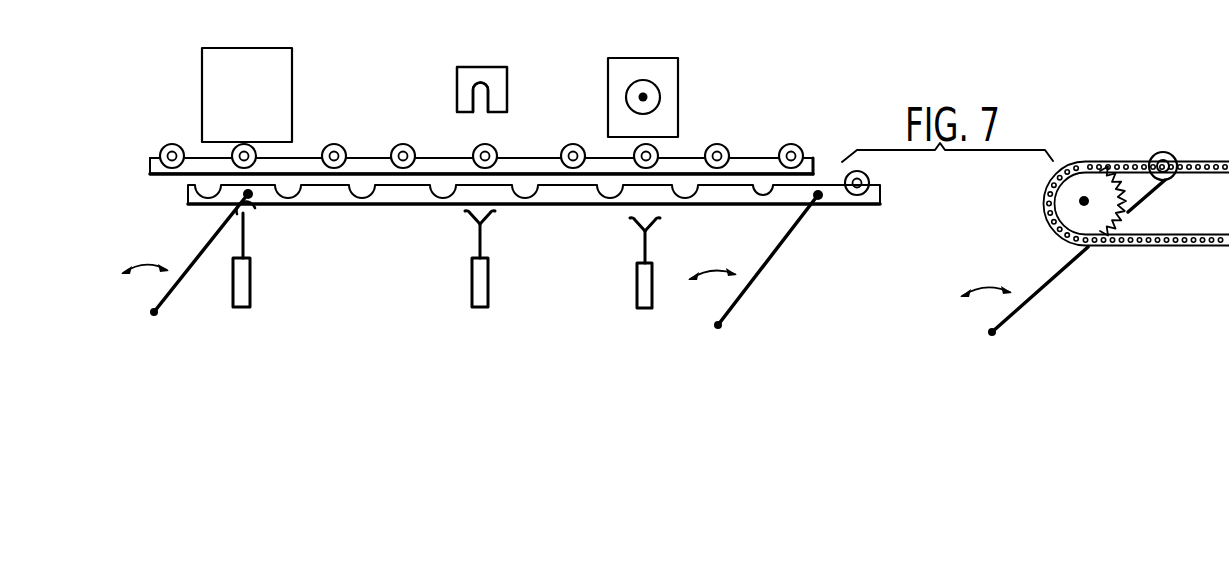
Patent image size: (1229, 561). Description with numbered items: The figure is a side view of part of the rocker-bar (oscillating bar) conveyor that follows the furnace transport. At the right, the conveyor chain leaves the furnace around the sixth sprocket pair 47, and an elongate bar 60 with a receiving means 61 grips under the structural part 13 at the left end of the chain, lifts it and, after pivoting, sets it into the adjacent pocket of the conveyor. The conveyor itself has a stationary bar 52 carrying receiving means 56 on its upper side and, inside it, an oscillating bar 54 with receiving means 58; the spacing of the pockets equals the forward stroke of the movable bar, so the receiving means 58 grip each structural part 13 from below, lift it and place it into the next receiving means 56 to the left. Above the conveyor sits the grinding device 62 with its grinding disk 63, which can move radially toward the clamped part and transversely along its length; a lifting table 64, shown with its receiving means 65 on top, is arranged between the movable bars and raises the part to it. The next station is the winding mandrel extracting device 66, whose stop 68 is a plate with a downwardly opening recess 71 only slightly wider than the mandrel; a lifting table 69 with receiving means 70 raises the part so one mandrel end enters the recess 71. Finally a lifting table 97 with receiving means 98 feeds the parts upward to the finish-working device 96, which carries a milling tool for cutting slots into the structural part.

The structural part 13 is at (795, 146).
The sixth sprocket pair 47 is at (1083, 180).
The stationary bar 52 is at (755, 162).
The oscillating bar 54 is at (557, 198).
The receiving means 56 is at (557, 164).
The receiving means 58 is at (768, 195).
The elongate bar 60 is at (1042, 290).
The receiving means 61 is at (1170, 180).
The grinding device 62 is at (663, 81).
The grinding disk 63 is at (636, 80).
The lifting table 64 is at (648, 290).
The fork 65 is at (636, 221).
The winding mandrel extracting device 66 is at (440, 69).
The stop 68 is at (454, 69).
The lifting table 69 is at (484, 279).
The receiving means 70 is at (468, 213).
The recess 71 is at (474, 98).
The finish-working device 96 is at (260, 101).
The lifting table 97 is at (248, 274).
The receiving means 98 is at (255, 210).